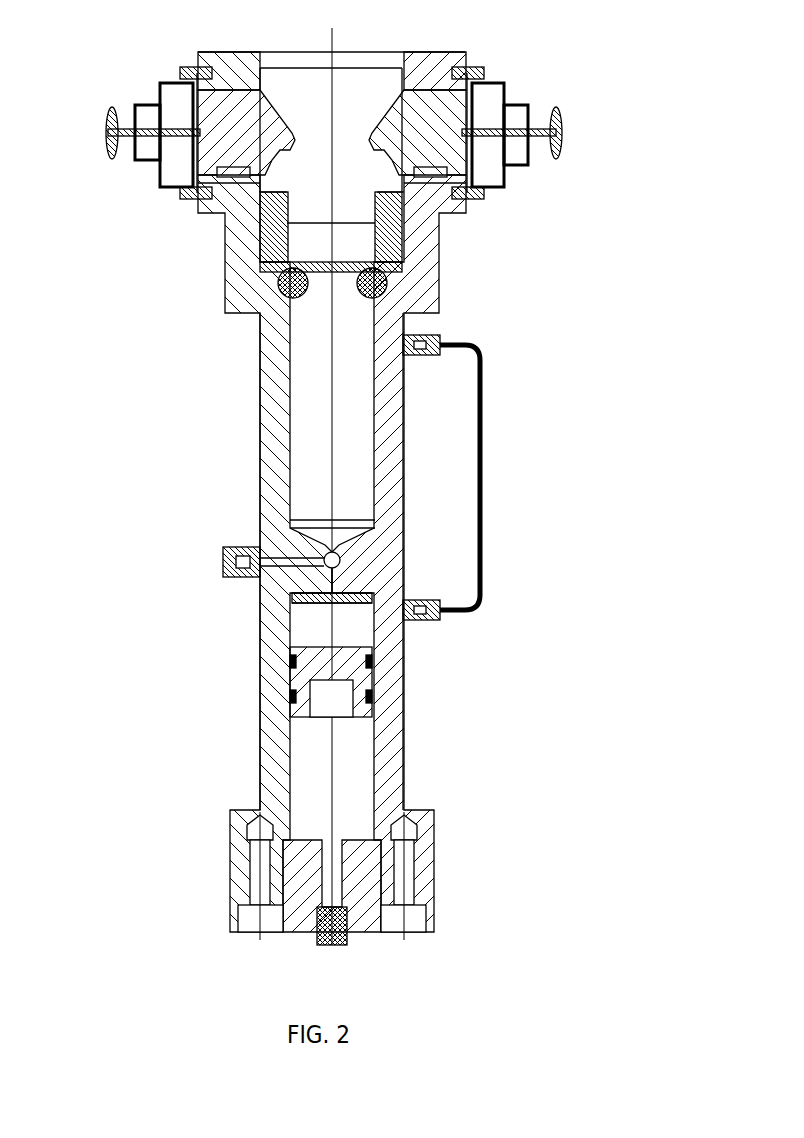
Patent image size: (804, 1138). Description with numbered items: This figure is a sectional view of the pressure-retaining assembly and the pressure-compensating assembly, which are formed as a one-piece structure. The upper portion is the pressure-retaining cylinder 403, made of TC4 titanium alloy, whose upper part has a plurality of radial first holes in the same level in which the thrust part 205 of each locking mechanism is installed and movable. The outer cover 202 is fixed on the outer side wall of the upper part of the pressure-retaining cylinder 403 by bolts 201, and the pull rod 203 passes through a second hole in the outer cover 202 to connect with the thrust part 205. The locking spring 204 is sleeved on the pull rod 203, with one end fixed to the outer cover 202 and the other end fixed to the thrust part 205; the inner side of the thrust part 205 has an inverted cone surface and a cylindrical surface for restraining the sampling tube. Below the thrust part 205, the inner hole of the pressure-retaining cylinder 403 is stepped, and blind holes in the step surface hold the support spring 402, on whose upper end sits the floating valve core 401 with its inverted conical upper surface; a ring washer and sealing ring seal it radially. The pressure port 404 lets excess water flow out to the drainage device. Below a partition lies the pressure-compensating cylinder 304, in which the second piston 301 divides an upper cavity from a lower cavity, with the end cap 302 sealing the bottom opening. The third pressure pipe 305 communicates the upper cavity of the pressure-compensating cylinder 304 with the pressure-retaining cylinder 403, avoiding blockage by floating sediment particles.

The bolts 201 is at (205, 72).
The outer cover 202 is at (162, 98).
The pull rod 203 is at (106, 133).
The locking spring 204 is at (158, 158).
The thrust part 205 is at (192, 190).
The floating valve core 401 is at (263, 258).
The support spring 402 is at (283, 300).
The pressure-retaining cylinder 403 is at (268, 425).
The pressure port 404 is at (223, 562).
The third pressure pipe 305 is at (483, 522).
The second piston 301 is at (290, 693).
The pressure-compensating cylinder 304 is at (370, 773).
The end cap 302 is at (238, 880).